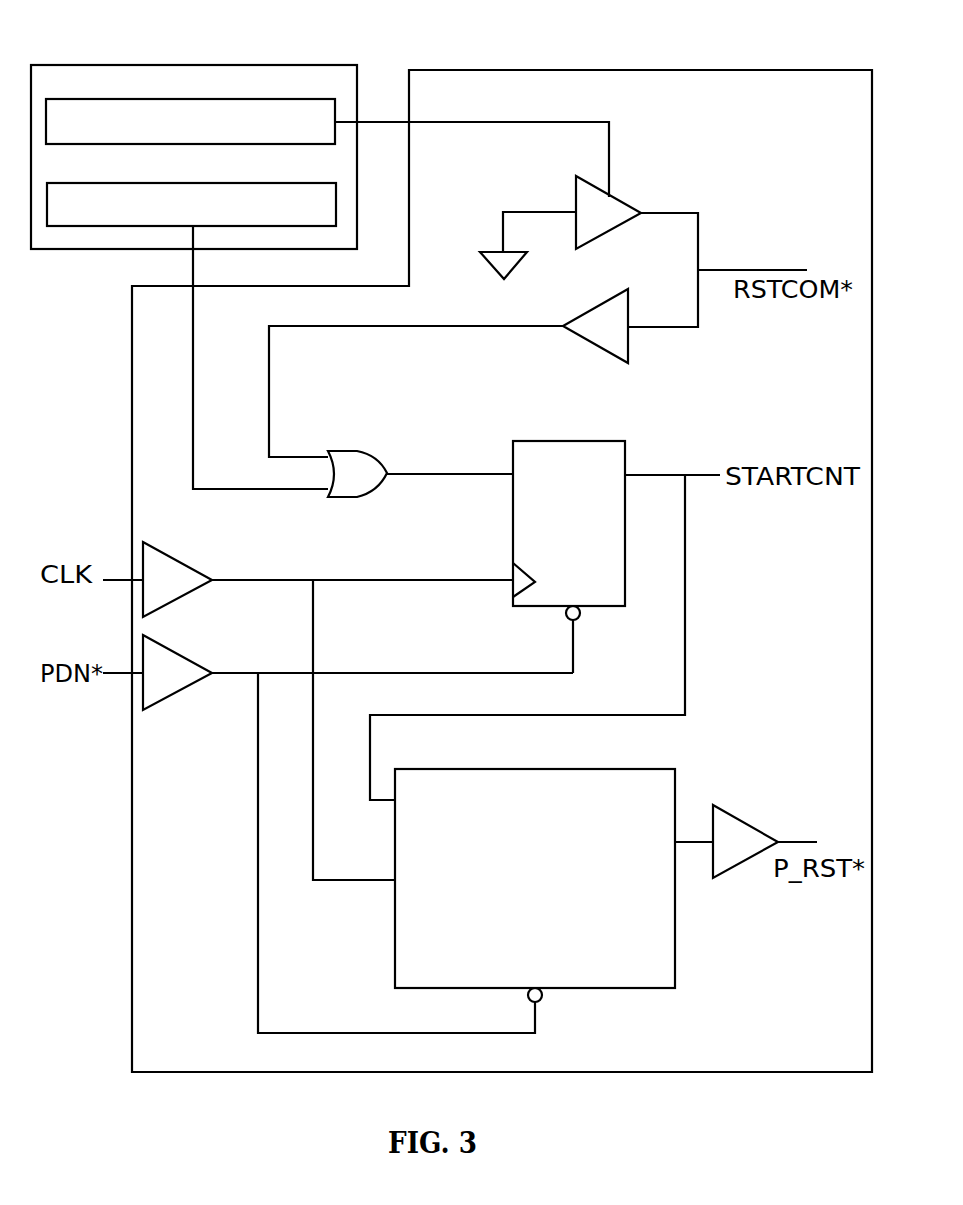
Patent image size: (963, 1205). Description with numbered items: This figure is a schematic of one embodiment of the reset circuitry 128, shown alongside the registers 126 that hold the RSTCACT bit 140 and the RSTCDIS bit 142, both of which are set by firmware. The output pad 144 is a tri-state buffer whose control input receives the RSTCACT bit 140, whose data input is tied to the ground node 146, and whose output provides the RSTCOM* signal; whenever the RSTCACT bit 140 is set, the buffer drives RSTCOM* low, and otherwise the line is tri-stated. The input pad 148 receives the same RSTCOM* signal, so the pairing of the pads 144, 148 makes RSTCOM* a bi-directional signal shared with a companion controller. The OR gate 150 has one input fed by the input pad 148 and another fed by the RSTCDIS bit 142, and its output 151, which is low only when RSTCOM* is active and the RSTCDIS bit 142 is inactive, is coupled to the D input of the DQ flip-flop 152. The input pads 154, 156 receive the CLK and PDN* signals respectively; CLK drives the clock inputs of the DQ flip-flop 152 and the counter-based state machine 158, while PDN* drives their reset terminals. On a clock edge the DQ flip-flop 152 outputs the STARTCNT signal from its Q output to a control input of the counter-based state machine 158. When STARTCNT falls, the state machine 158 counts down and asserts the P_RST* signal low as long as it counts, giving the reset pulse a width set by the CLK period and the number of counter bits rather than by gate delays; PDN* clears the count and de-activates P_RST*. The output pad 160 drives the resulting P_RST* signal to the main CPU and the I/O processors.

The registers 126 is at (105, 64).
The reset circuitry 128 is at (822, 114).
The RSTCACT bit 140 is at (325, 134).
The RSTCDIS bit 142 is at (311, 216).
The output pad 144 is at (630, 198).
The ground node 146 is at (490, 268).
The input pad 148 is at (600, 352).
The OR gate 150 is at (338, 450).
The output of the OR gate 151 is at (450, 489).
The DQ flip-flop 152 is at (583, 534).
The input pad 154 is at (170, 553).
The input pad 156 is at (170, 641).
The counter-based state machine 158 is at (552, 909).
The output pad 160 is at (737, 817).